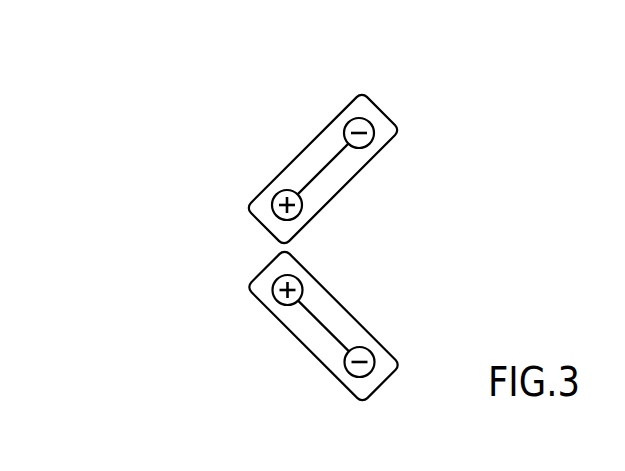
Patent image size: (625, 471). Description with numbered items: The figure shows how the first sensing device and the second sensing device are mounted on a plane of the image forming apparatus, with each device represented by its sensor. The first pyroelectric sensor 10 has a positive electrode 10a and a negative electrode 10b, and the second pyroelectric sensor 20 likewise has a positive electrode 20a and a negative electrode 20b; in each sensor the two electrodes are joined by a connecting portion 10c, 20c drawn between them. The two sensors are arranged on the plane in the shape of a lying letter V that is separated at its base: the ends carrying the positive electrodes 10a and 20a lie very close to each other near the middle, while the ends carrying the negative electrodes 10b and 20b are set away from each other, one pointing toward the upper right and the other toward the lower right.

The first pyroelectric sensor 10 is at (363, 173).
The positive electrode 10a is at (274, 193).
The negative electrode 10b is at (362, 118).
The connecting portion of first battery 10c is at (323, 170).
The second pyroelectric sensor 20 is at (315, 357).
The positive electrode 20a is at (275, 298).
The negative electrode 20b is at (371, 354).
The connecting portion of second battery 20c is at (318, 322).